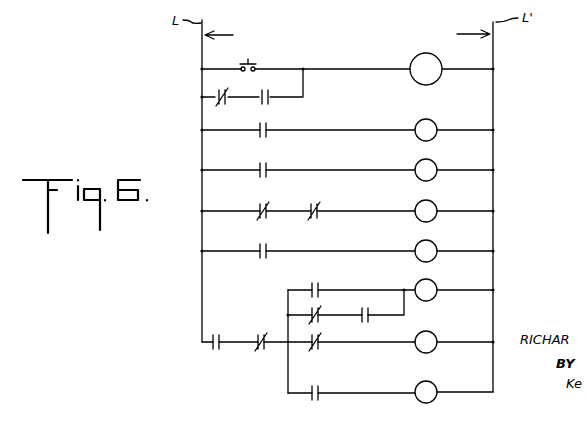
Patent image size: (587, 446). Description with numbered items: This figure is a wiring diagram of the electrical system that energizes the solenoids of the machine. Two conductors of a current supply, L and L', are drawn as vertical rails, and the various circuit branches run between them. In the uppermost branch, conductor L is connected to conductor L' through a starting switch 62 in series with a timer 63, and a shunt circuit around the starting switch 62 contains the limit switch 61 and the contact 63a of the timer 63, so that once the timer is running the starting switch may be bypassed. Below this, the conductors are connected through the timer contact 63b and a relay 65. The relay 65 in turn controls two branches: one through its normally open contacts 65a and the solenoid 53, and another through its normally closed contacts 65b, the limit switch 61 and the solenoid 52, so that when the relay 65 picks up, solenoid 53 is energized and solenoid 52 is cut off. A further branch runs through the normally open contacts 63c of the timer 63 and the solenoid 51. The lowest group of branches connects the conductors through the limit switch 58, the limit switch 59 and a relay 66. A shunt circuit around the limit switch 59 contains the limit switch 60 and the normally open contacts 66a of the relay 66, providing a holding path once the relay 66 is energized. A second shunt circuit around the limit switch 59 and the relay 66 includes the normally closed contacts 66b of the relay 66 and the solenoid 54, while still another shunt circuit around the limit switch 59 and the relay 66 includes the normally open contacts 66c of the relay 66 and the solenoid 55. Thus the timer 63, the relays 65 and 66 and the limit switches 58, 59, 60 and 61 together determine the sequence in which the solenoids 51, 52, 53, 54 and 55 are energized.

The starting switch 62 is at (263, 62).
The timer 63 is at (426, 53).
The contact of the timer 63a is at (265, 105).
The timer contact 63b is at (262, 139).
The normally open contacts of the timer 63c is at (265, 242).
The limit switch 61 is at (217, 108).
The relay 65 is at (432, 120).
The normally open contacts of the relay 65a is at (265, 161).
The normally closed contacts of the relay 65b is at (265, 201).
The solenoid 53 is at (432, 160).
The solenoid 52 is at (432, 201).
The solenoid 51 is at (432, 241).
The limit switch 59 is at (315, 281).
The relay 66 is at (432, 280).
The limit switch 60 is at (318, 306).
The normally open contacts of the relay 66a is at (366, 323).
The normally closed contacts of the relay 66b is at (316, 351).
The normally open contacts of the relay 66c is at (315, 402).
The solenoid 54 is at (432, 332).
The limit switch 58 is at (260, 352).
The solenoid 55 is at (432, 382).